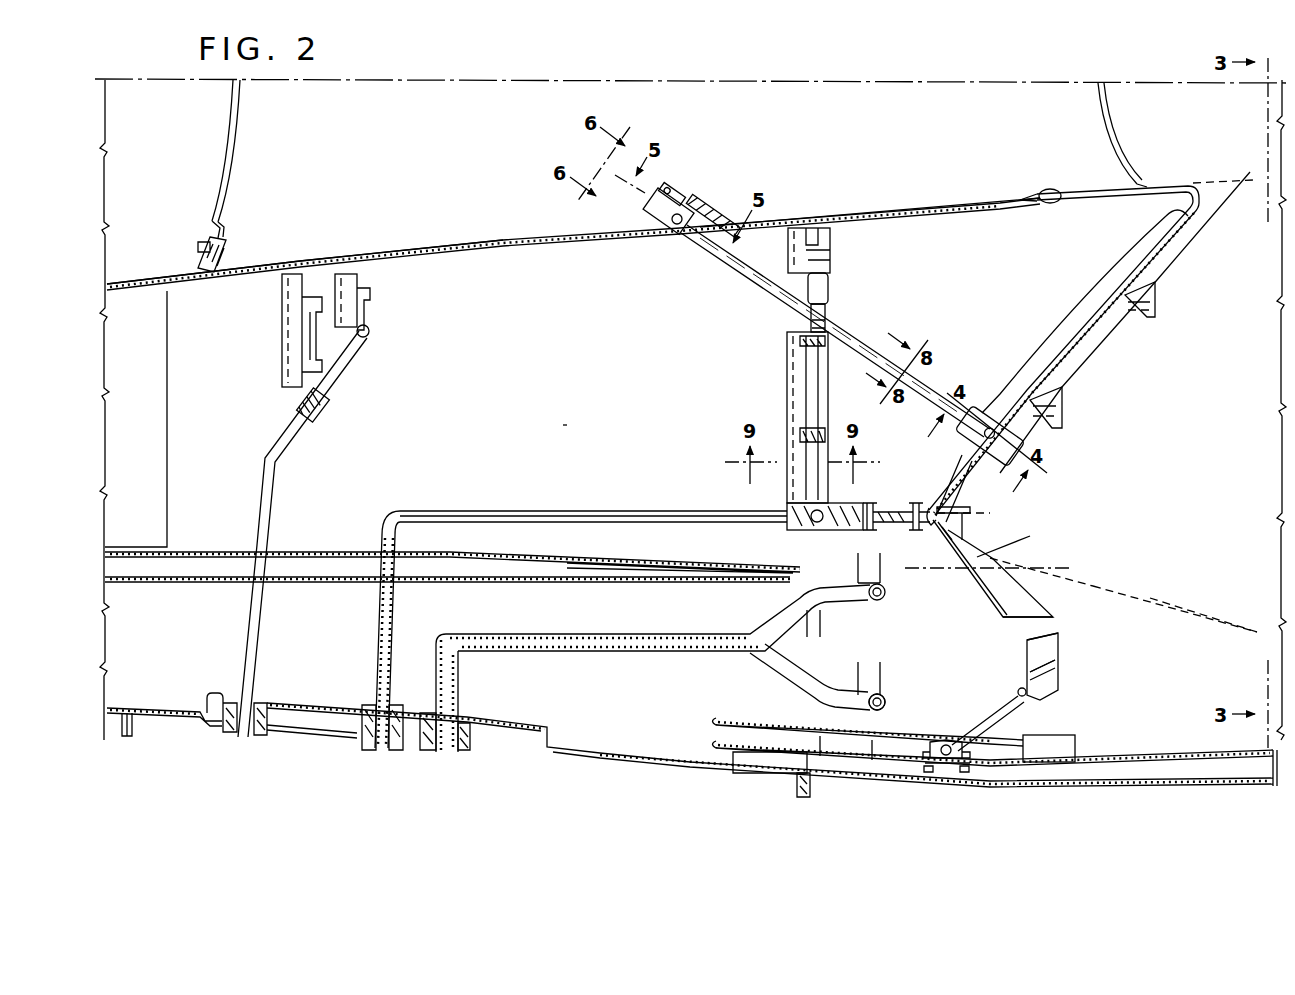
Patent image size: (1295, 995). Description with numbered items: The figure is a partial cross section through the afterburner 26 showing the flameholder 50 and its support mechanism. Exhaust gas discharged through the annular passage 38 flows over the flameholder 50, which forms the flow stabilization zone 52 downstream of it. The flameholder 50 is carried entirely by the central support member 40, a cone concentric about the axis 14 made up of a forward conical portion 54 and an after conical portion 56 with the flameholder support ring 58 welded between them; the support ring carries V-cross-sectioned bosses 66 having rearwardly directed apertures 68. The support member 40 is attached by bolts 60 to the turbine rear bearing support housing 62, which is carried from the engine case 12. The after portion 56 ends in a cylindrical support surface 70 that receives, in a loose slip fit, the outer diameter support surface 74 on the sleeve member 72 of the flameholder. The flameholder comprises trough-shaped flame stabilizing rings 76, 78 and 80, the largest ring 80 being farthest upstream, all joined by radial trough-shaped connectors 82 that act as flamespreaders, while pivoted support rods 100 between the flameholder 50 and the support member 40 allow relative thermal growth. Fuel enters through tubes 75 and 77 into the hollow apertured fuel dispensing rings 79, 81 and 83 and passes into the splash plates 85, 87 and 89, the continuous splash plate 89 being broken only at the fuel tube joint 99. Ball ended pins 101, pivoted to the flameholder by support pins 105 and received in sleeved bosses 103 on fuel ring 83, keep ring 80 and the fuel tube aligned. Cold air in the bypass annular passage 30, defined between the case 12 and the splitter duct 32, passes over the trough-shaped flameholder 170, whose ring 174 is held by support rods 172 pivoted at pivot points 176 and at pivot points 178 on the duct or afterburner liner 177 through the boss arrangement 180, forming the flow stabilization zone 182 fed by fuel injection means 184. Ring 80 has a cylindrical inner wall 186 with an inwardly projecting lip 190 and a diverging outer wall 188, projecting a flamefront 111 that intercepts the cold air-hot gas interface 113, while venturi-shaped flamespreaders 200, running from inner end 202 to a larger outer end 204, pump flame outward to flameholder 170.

The engine case 12 is at (595, 770).
The axis 14 is at (541, 78).
The afterburner 26 is at (1255, 438).
The bypass annular passage 30 is at (652, 652).
The splitter duct 32 is at (448, 583).
The annular passage 38 is at (558, 356).
The central support member 40 is at (469, 246).
The flameholder 50 is at (1212, 253).
The flow stabilization zone 52 is at (1168, 403).
The forward conical portion 54 is at (399, 252).
The after conical portion 56 is at (884, 210).
The flameholder support ring 58 is at (706, 203).
The bolts 60 is at (228, 246).
The turbine rear bearing support housing 62 is at (183, 270).
The V-cross sectioned bosses 66 is at (664, 205).
The apertures 68 is at (668, 229).
The cylindrical support surface 70 is at (1042, 203).
The sleeve member 72 is at (1106, 195).
The outer diameter support surface 74 is at (1068, 205).
The fuel tube 75 is at (262, 490).
The flame stabilizing ring 76 is at (1152, 320).
The fuel tube 77 is at (459, 506).
The flame stabilizing ring 78 is at (1054, 427).
The fuel dispensing ring 79 is at (326, 406).
The flame stabilizing ring 80 is at (953, 540).
The fuel dispensing ring 81 is at (370, 331).
The connectors 82 is at (1212, 212).
The fuel dispensing ring 83 is at (822, 388).
The splash plate 85 is at (292, 326).
The splash plate 87 is at (350, 293).
The splash plate 89 is at (787, 384).
The fuel tube joint 99 is at (830, 286).
The support rods 100 is at (842, 332).
The ball ended pin 101 is at (868, 505).
The sleeved boss 103 is at (806, 530).
The support pin 105 is at (915, 503).
The flamefront 111 is at (1180, 622).
The cold air-hot gas interface 113 is at (922, 571).
The flameholder 170 is at (1066, 670).
The support rods 172 is at (980, 710).
The flameholder ring 174 is at (1058, 640).
The pivot points 176 is at (1048, 698).
The afterburner liner 177 is at (1120, 746).
The pivot points 178 is at (947, 745).
The boss arrangement 180 is at (943, 760).
The flow stabilization zone 182 is at (1163, 683).
The fuel injection means 184 is at (866, 712).
The inner wall 186 is at (958, 515).
The outer wall 188 is at (950, 530).
The lip 190 is at (977, 506).
The flamespreaders 200 is at (1094, 571).
The inner end 202 is at (1117, 583).
The outer end 204 is at (1055, 620).